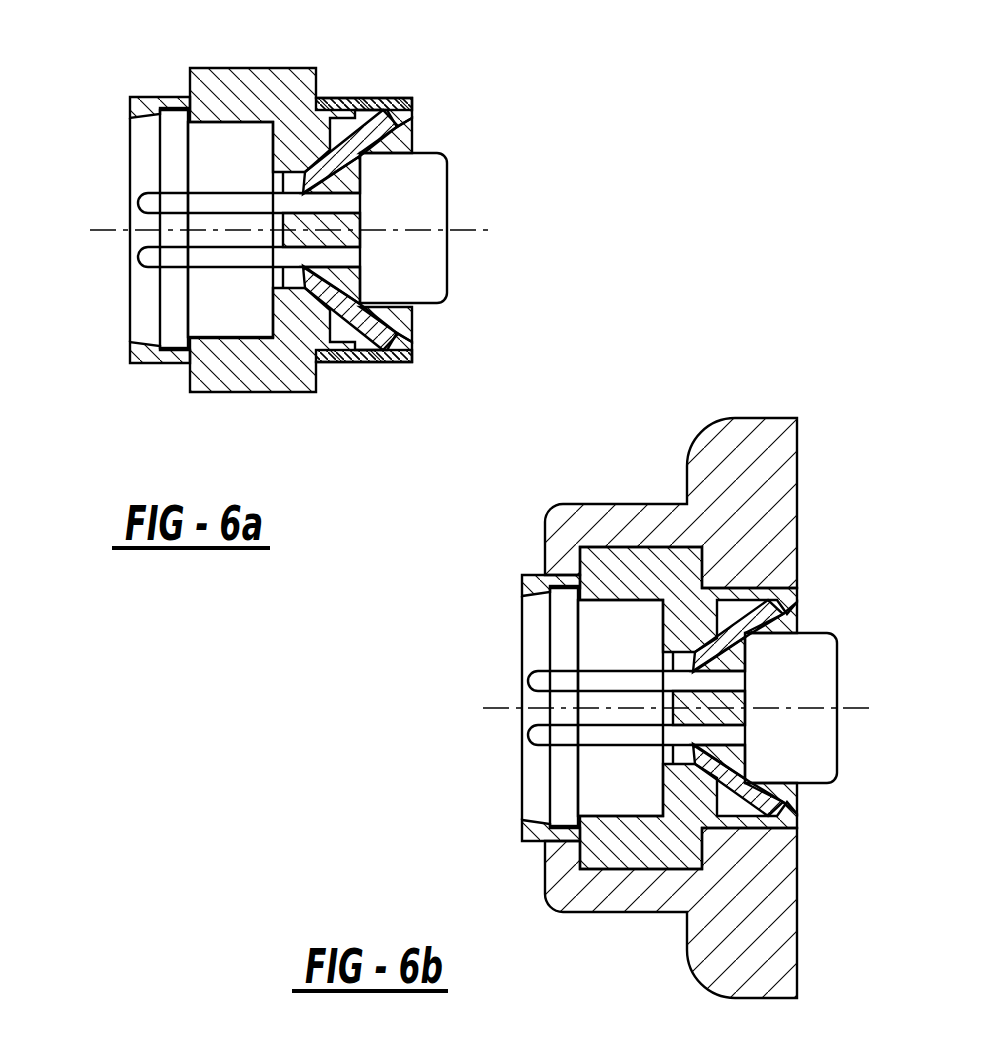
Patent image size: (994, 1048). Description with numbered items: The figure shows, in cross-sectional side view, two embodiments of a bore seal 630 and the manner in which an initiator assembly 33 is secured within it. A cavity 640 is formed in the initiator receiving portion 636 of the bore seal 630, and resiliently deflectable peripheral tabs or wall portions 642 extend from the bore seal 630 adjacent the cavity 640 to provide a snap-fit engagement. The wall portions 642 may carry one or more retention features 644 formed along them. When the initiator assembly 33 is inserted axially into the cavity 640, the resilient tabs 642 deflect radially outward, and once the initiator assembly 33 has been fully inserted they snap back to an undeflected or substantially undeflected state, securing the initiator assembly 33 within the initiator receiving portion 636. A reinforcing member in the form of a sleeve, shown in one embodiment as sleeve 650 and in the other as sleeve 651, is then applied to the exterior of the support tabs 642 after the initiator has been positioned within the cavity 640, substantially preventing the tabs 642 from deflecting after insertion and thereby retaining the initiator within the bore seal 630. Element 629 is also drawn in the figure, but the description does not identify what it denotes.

In FIG. 6A, the cavity 640 is at (318, 150).
In FIG. 6B, the cavity 640 is at (700, 633).
In FIG. 6A, the sleeve 650 is at (373, 100).
In FIG. 6A, the resiliently deflectable peripheral tabs 642 is at (410, 115).
In FIG. 6B, the resiliently deflectable peripheral tabs 642 is at (772, 588).
In FIG. 6A, the retention features 644 is at (383, 140).
In FIG. 6B, the retention features 644 is at (795, 603).
In FIG. 6A, the initiator receiving portion 636 is at (300, 330).
In FIG. 6B, the initiator receiving portion 636 is at (672, 820).
In FIG. 6A, the cover 629 is at (140, 303).
In FIG. 6B, the cover 629 is at (530, 630).
In FIG. 6A, the bore seal 630 is at (140, 362).
In FIG. 6B, the bore seal 630 is at (537, 832).
In FIG. 6A, the initiator assembly 33 is at (437, 275).
In FIG. 6B, the initiator assembly 33 is at (815, 762).
In FIG. 6B, the sleeve 651 is at (772, 437).